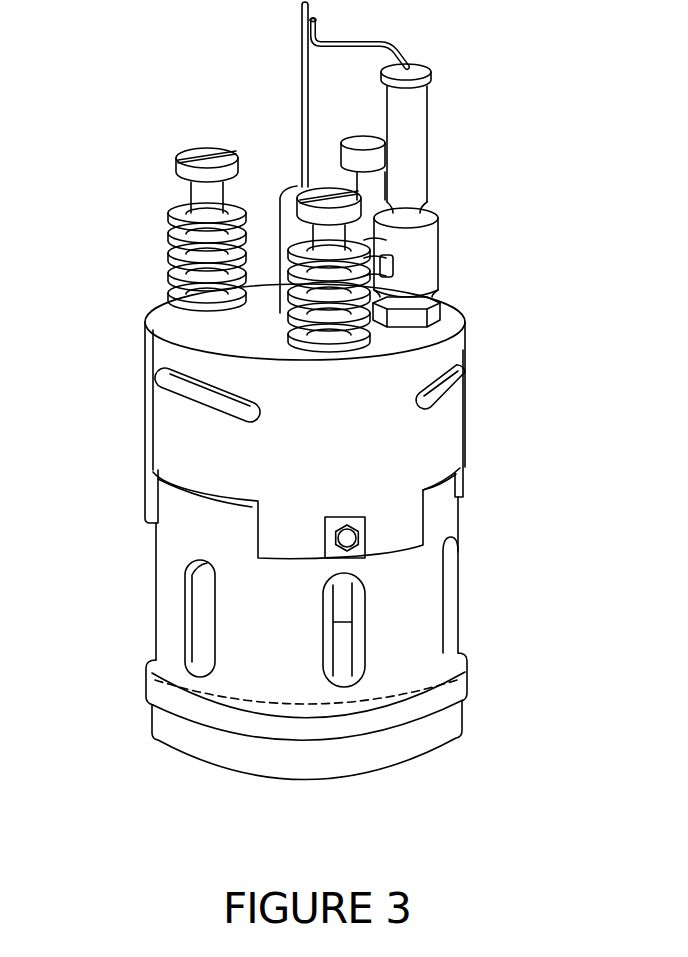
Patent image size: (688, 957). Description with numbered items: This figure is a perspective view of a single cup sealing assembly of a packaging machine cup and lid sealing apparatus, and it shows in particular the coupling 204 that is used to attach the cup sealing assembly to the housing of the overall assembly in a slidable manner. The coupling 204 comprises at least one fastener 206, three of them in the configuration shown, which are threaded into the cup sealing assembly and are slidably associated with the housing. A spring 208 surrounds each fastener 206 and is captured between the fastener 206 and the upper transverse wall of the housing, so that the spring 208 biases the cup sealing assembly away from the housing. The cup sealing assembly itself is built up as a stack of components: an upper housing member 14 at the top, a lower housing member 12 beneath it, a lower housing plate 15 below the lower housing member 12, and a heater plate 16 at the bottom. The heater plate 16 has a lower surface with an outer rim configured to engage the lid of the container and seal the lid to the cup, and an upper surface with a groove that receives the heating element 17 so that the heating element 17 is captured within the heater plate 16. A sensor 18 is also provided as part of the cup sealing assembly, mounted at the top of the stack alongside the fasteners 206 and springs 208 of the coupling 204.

The lower housing member 12 is at (150, 590).
The upper housing member 14 is at (143, 415).
The lower housing plate 15 is at (145, 687).
The heater plate 16 is at (153, 743).
The heating element 17 is at (300, 57).
The sensor 18 is at (430, 113).
The coupling 204 is at (167, 257).
The fastener 206 is at (212, 143).
The spring 208 is at (168, 213).